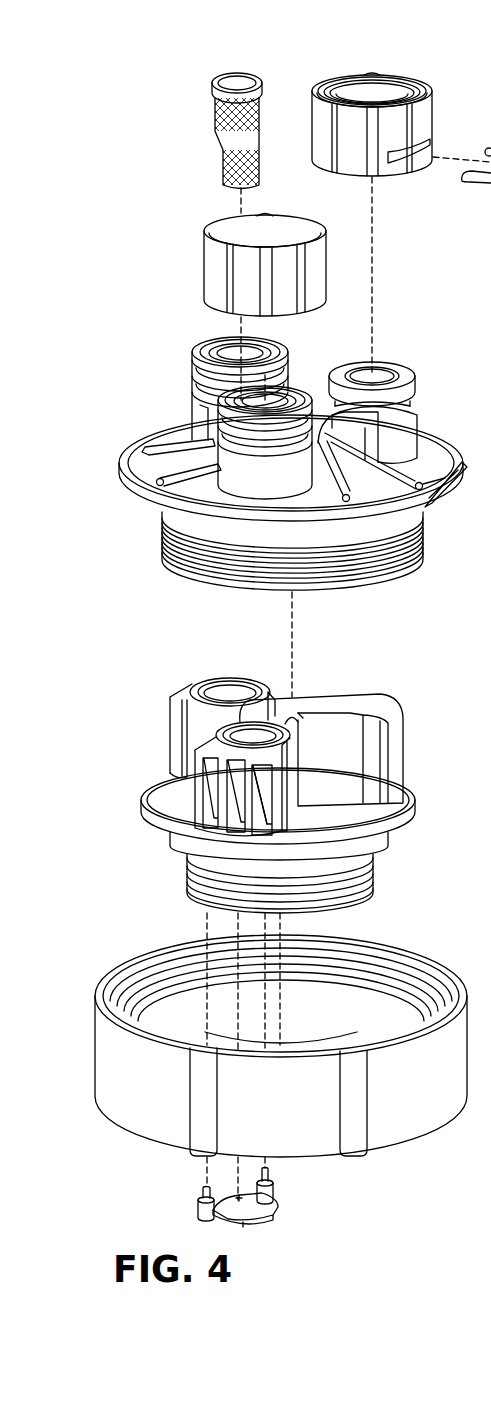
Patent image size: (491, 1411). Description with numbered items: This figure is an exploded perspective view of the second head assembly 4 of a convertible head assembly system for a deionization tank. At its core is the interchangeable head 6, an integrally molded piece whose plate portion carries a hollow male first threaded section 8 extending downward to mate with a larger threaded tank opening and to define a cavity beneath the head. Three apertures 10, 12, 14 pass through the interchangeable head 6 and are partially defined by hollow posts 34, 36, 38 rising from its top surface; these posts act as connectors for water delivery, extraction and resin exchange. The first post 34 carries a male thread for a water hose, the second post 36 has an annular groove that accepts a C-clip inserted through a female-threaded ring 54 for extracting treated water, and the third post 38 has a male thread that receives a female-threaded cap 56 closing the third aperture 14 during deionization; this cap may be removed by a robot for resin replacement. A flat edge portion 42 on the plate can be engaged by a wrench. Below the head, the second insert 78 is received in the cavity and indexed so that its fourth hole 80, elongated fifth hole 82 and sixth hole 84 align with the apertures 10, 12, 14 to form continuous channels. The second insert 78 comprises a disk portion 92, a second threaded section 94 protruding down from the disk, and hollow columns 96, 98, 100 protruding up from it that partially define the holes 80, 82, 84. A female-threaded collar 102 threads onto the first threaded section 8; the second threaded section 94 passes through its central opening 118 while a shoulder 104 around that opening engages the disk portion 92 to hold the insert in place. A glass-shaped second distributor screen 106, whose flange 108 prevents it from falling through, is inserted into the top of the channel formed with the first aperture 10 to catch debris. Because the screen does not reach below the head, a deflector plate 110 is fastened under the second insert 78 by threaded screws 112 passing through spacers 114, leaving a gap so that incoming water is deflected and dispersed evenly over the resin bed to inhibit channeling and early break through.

The second head assembly 4 is at (87, 76).
The interchangeable head 6 is at (111, 394).
The first threaded section 8 is at (170, 540).
The first aperture 10 is at (254, 345).
The second aperture 12 is at (391, 369).
The third aperture 14 is at (265, 389).
The first post 34 is at (200, 408).
The second post 36 is at (410, 431).
The third post 38 is at (240, 465).
The flat edge portion 42 is at (440, 490).
The female-threaded ring 54 is at (425, 112).
The female-threaded cap 56 is at (213, 275).
The second insert 78 is at (127, 733).
The fourth hole 80 is at (214, 686).
The fifth hole 82 is at (331, 697).
The sixth hole 84 is at (248, 723).
The disk portion 92 is at (151, 811).
The second threaded section 94 is at (188, 876).
The hollow column 96 is at (168, 716).
The hollow column 98 is at (356, 745).
The hollow column 100 is at (267, 800).
The female-threaded collar 102 is at (438, 1095).
The shoulder 104 is at (366, 1025).
The second distributor screen 106 is at (216, 115).
The flange 108 is at (261, 83).
The deflector plate 110 is at (262, 1210).
The threaded screws 112 is at (202, 1193).
The spacers 114 is at (198, 1212).
The central opening 118 is at (298, 1034).